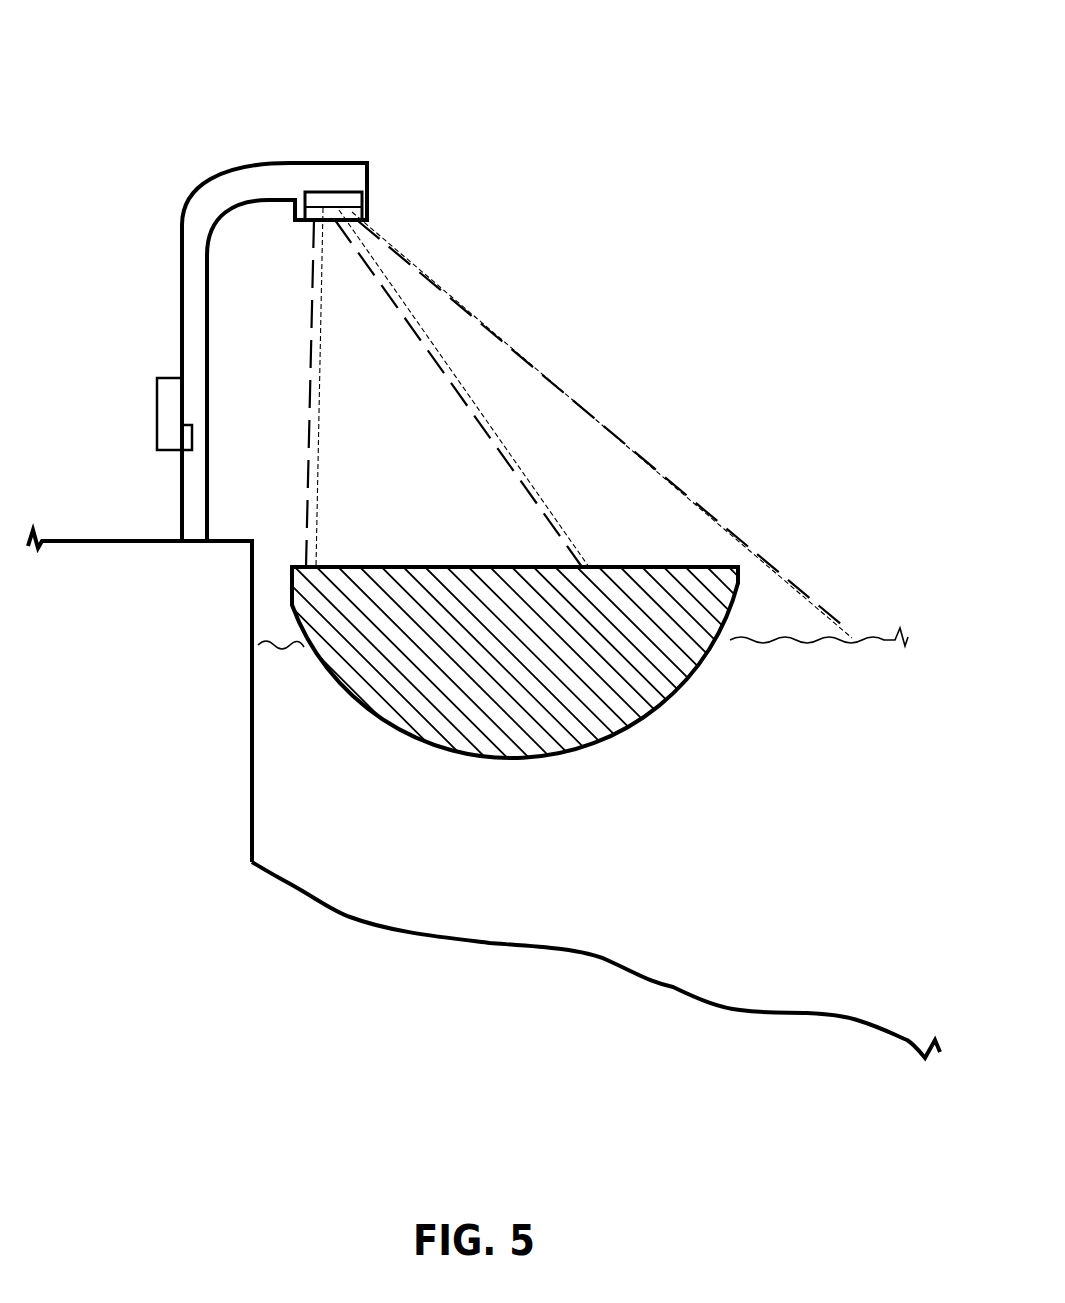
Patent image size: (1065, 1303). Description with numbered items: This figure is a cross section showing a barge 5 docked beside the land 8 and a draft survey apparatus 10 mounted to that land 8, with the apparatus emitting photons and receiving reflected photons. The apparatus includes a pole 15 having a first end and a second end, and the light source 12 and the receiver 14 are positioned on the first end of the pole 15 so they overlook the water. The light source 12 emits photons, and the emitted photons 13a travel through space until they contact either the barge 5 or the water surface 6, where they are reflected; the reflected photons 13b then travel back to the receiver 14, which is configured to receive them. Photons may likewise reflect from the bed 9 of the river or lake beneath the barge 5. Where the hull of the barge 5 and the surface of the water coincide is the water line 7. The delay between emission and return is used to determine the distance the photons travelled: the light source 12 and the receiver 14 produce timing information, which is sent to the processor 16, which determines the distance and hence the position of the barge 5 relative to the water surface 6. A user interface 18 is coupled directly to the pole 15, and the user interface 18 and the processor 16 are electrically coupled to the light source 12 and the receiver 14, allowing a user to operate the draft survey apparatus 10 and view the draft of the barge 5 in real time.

The draft survey apparatus 10 is at (173, 52).
The receiver 14 is at (363, 195).
The light source 12 is at (362, 207).
The pole 15 is at (182, 343).
The user interface 18 is at (157, 422).
The processor 16 is at (192, 437).
The land 8 is at (122, 541).
The emitted photons 13a is at (310, 307).
The reflected photons 13b is at (318, 368).
The barge 5 is at (673, 697).
The water line 7 is at (727, 657).
The water surface 6 is at (827, 648).
The bed 9 is at (660, 982).